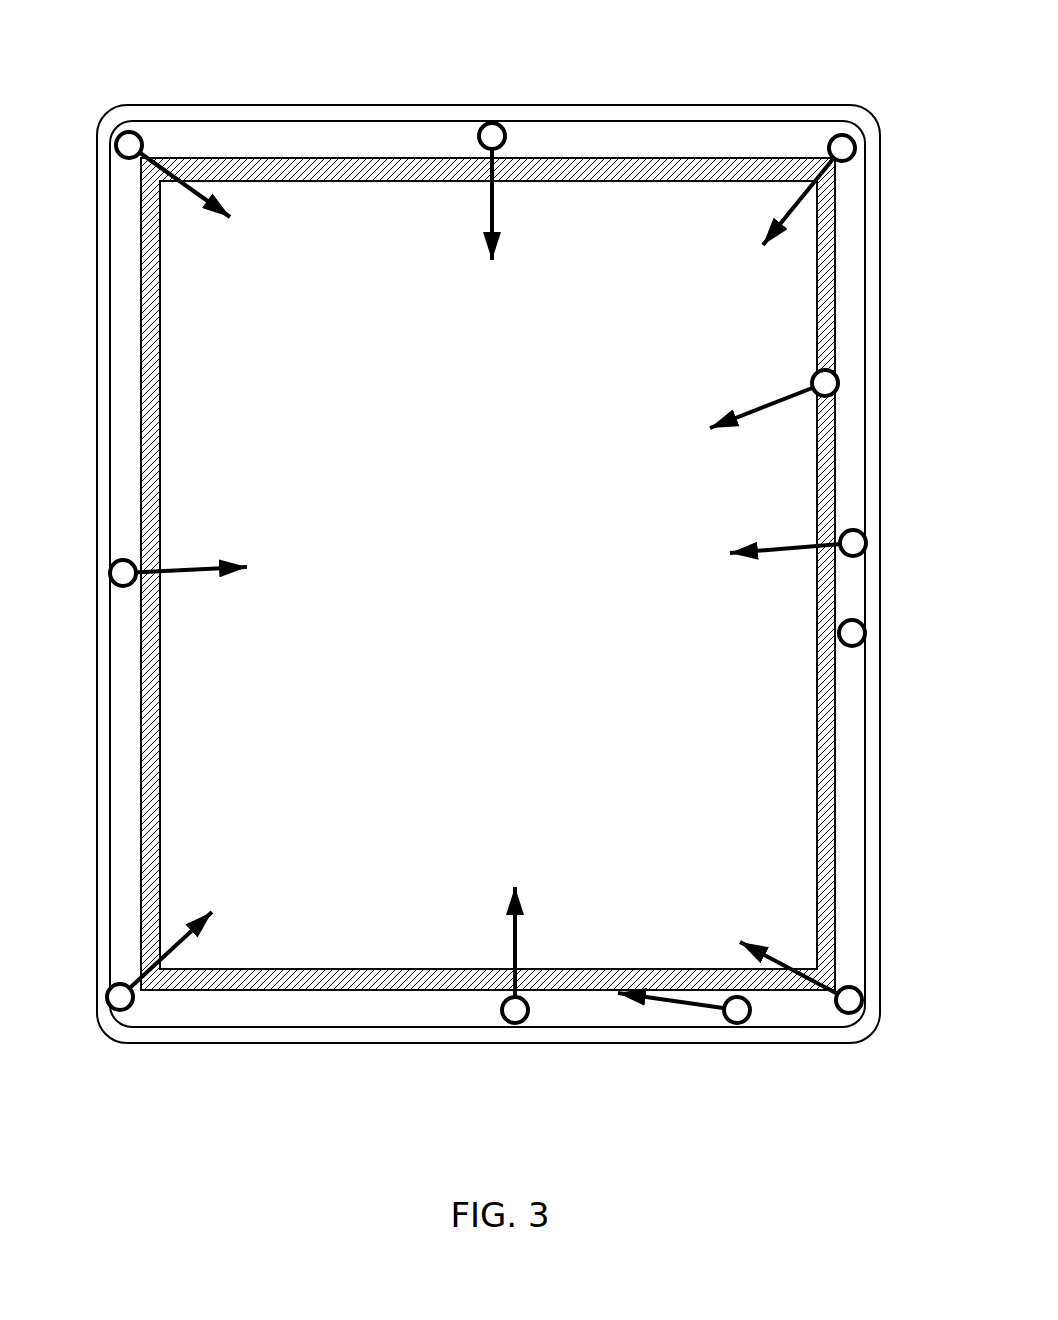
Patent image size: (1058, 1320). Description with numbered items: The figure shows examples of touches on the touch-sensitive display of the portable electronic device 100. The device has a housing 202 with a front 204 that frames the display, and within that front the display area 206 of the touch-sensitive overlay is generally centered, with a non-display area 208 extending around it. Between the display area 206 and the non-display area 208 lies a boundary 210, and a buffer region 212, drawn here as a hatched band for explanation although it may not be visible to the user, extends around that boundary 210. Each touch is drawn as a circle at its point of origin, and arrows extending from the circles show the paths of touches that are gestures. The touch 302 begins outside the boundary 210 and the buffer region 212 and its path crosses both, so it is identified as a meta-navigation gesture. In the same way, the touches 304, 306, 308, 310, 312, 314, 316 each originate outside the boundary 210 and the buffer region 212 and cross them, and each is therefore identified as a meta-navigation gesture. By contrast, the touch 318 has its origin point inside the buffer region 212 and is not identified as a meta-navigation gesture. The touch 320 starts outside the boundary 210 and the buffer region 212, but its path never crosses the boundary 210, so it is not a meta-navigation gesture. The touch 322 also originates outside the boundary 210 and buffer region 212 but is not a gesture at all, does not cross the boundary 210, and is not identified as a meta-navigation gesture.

The portable electronic device 100 is at (502, 578).
The housing 202 is at (290, 104).
The front 204 is at (647, 113).
The display area 206 is at (742, 338).
The non-display area 208 is at (843, 823).
The boundary 210 is at (817, 747).
The buffer region 212 is at (822, 475).
The touch 302 is at (515, 1023).
The touch 304 is at (111, 569).
The touch 306 is at (865, 538).
The touch 308 is at (502, 123).
The touch 310 is at (138, 134).
The touch 312 is at (852, 139).
The touch 314 is at (124, 1010).
The touch 316 is at (860, 993).
The touch 318 is at (836, 375).
The touch 320 is at (737, 1023).
The touch 322 is at (864, 628).